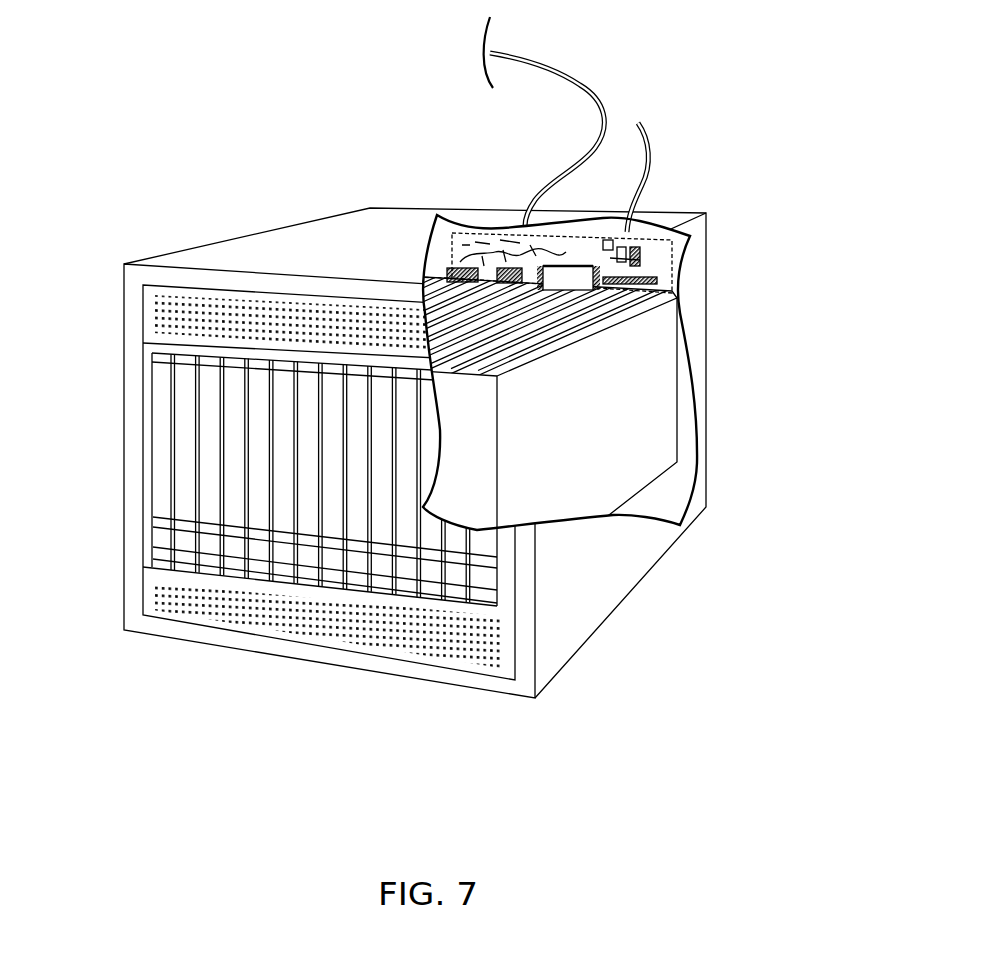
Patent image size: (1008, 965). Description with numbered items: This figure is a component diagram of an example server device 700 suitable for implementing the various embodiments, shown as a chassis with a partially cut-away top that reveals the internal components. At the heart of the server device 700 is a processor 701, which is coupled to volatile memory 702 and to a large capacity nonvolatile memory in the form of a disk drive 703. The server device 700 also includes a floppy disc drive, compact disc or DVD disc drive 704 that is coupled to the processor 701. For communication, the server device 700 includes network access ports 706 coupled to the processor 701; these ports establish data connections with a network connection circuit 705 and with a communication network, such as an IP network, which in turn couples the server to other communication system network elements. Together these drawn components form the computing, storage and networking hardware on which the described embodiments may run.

The server device 700 is at (131, 160).
The processor 701 is at (557, 273).
The volatile memory 702 is at (657, 287).
The disk drive 703 is at (208, 410).
The disc drive 704 is at (185, 475).
The network connection circuit 705 is at (448, 273).
The network access ports 706 is at (577, 75).